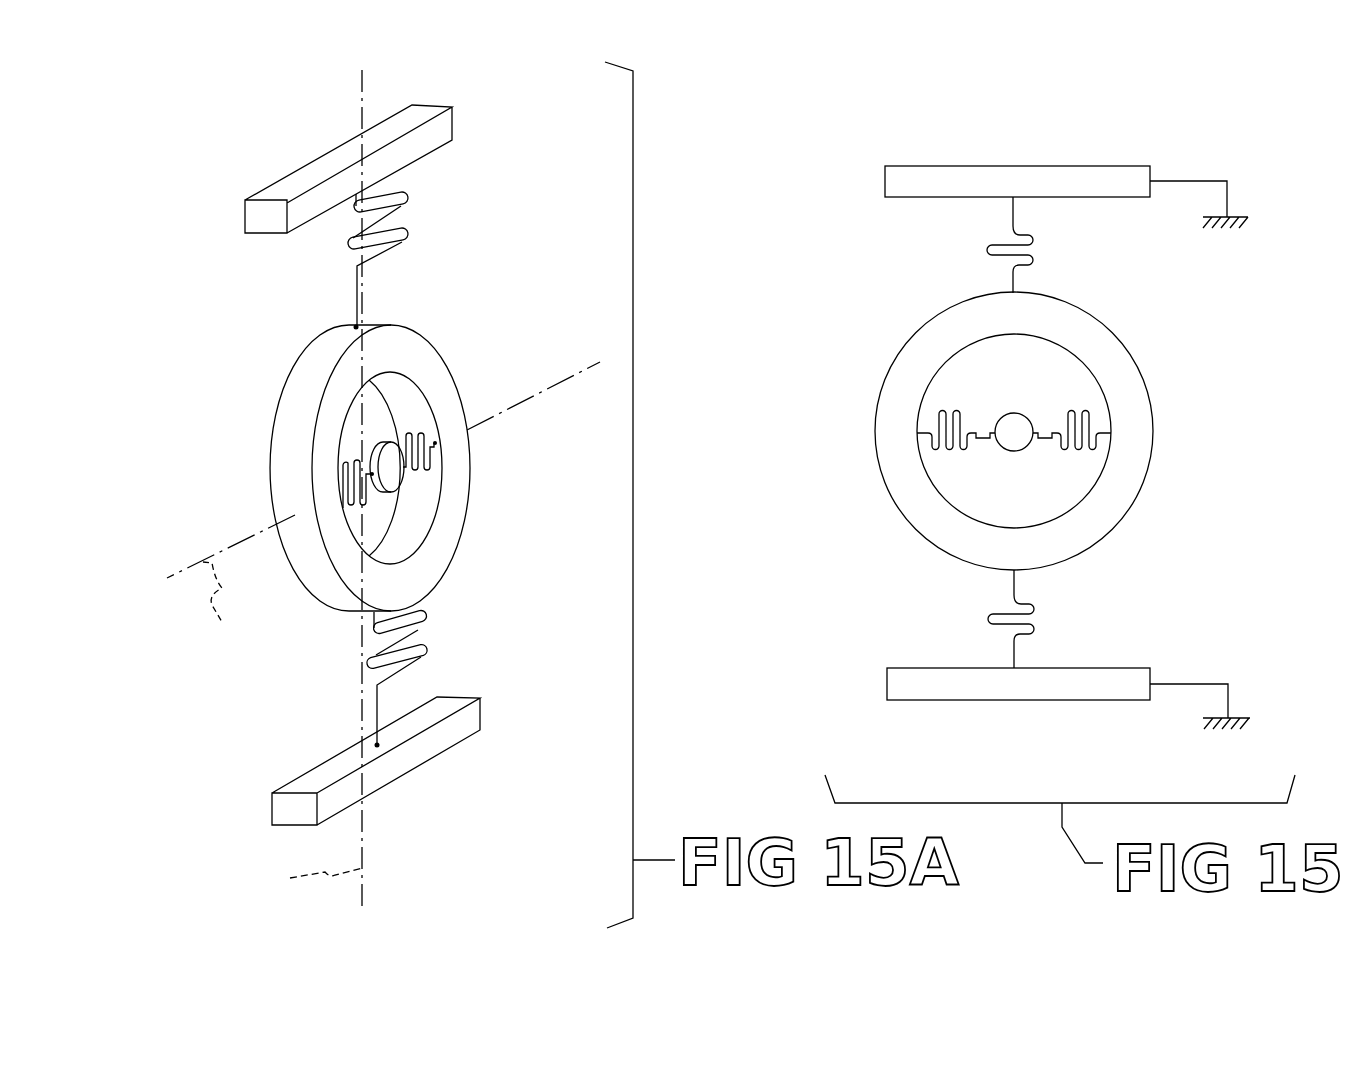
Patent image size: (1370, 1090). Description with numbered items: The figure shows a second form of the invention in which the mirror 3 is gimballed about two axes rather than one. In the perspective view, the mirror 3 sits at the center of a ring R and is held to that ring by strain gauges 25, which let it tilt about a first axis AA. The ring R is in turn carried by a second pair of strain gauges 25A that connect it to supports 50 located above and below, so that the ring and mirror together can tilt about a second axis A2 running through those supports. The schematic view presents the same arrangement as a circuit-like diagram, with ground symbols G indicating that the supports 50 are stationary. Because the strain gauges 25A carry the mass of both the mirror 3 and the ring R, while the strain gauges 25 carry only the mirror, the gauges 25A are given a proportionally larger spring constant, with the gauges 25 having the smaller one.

In FIG. 15A, the support 50 is at (453, 123).
In FIG. 15, the support 50 is at (885, 179).
In FIG. 15A, the strain gauge 25A is at (423, 220).
In FIG. 15, the strain gauge 25A is at (1045, 253).
In FIG. 15A, the strain gauge 25 is at (413, 418).
In FIG. 15, the strain gauge 25 is at (1070, 402).
In FIG. 15A, the mirror 3 is at (385, 445).
In FIG. 15, the mirror 3 is at (1013, 413).
In FIG. 15A, the ring R is at (471, 482).
In FIG. 15, the ring R is at (1138, 487).
In FIG. 15, the ground symbol G is at (1252, 238).
In FIG. 15A, the axis AA is at (226, 608).
In FIG. 15A, the axis A2 is at (304, 883).